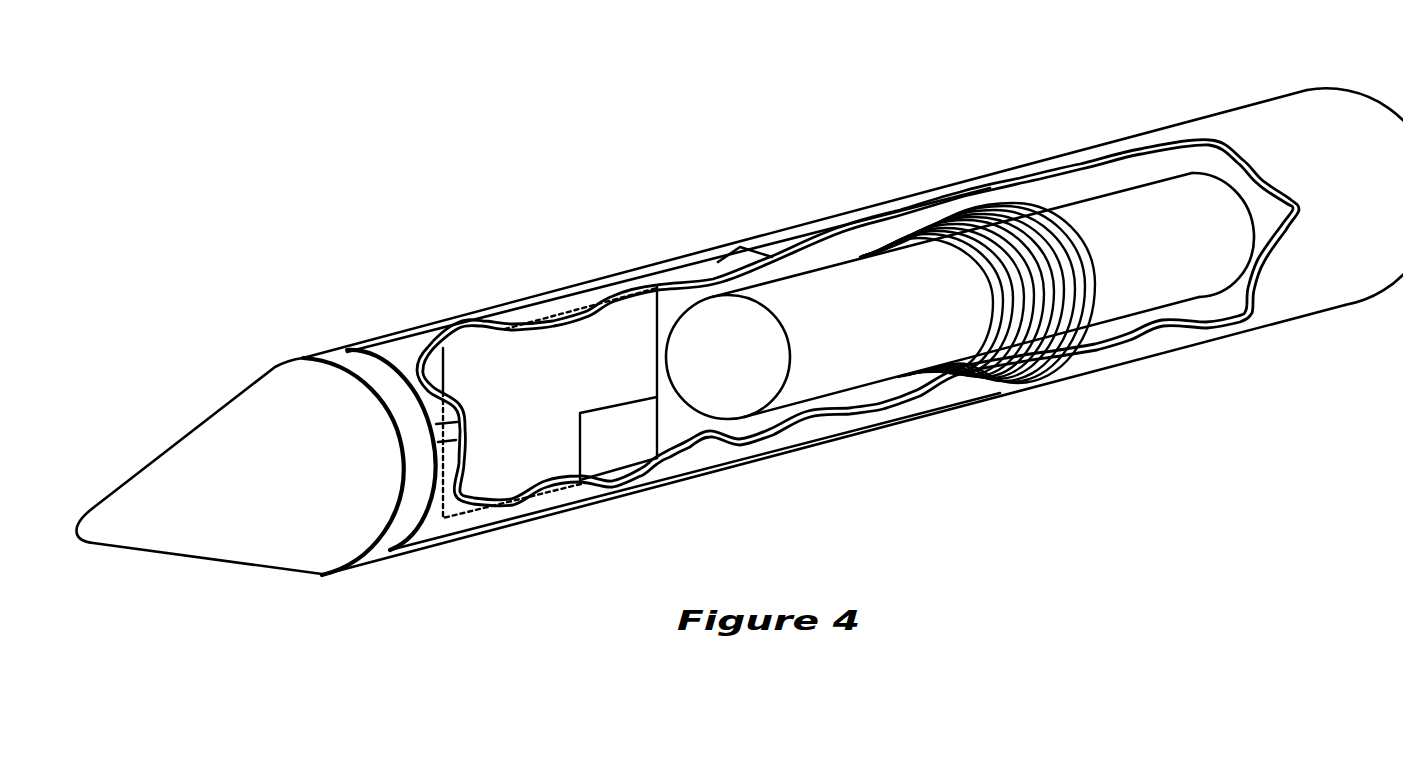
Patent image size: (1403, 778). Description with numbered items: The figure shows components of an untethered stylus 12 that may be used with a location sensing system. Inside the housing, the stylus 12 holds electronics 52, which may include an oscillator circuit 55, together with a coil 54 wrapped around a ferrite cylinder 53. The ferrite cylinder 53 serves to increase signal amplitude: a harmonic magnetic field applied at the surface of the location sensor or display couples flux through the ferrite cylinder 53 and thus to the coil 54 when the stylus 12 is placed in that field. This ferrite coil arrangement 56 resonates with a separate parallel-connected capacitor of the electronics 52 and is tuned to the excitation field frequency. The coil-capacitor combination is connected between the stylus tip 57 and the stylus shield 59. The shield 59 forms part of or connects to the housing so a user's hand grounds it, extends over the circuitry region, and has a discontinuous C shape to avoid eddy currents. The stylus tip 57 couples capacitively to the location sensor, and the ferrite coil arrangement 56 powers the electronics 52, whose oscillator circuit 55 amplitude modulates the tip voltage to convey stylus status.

The untethered stylus 12 is at (303, 322).
The electronics 52 is at (548, 357).
The ferrite cylinder 53 is at (817, 282).
The coil 54 is at (1000, 228).
The oscillator circuit 55 is at (642, 452).
The ferrite coil arrangement 56 is at (1058, 200).
The stylus tip 57 is at (170, 467).
The stylus shield 59 is at (413, 345).